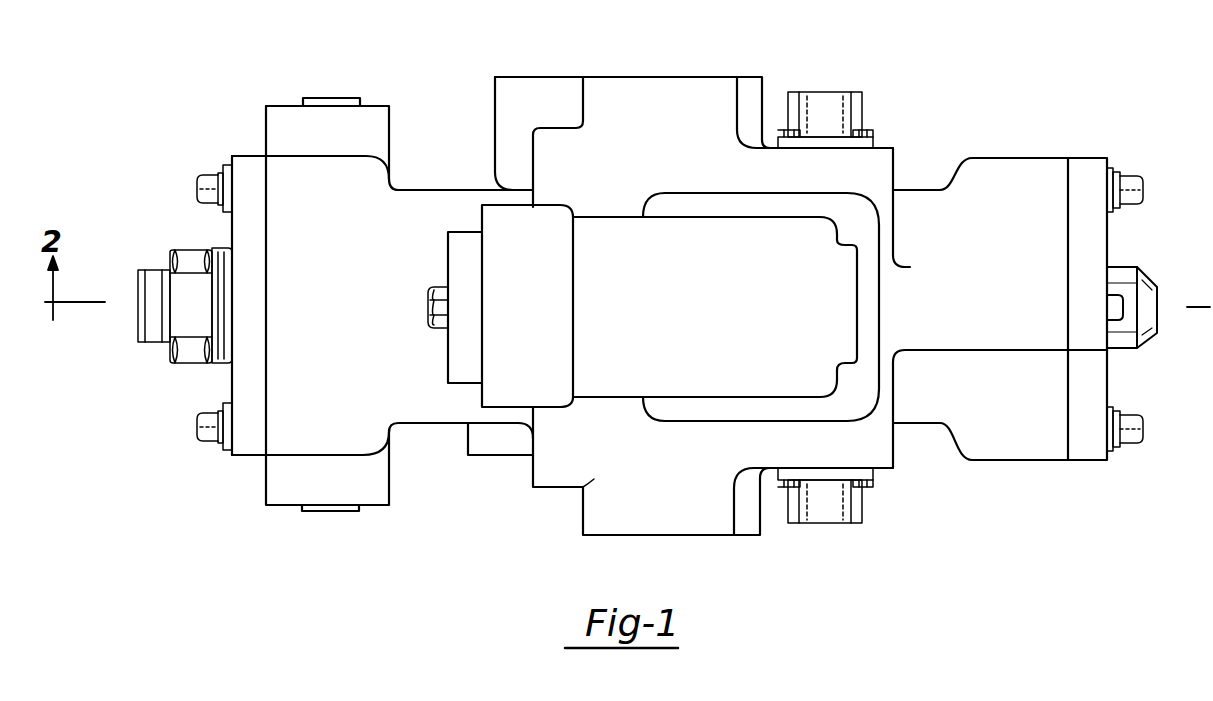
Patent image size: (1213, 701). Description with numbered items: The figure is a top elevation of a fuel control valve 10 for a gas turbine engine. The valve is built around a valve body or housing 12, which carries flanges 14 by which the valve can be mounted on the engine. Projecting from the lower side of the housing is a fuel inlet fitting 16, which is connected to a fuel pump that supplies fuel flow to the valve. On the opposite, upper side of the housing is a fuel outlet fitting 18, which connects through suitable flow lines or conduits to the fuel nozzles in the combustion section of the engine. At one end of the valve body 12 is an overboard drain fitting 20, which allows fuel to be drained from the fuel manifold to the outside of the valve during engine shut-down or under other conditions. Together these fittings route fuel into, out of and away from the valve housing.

The fuel control valve 10 is at (469, 526).
The valve body 12 is at (409, 203).
The flanges 14 is at (284, 113).
The fuel inlet fitting 16 is at (670, 536).
The fuel outlet fitting 18 is at (557, 77).
The overboard drain fitting 20 is at (1126, 341).